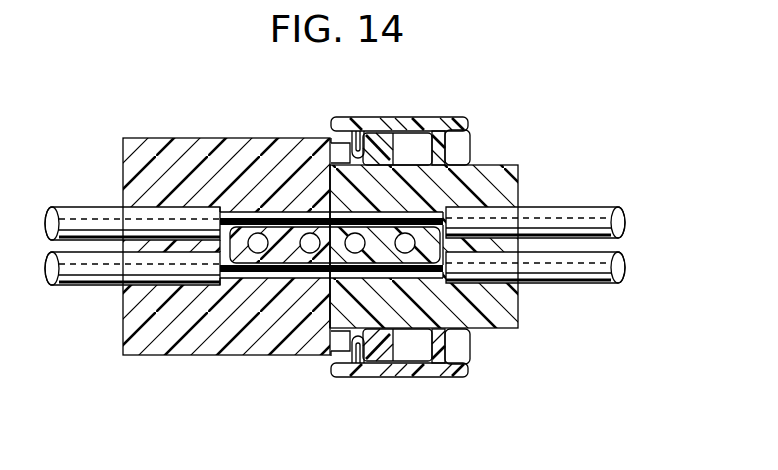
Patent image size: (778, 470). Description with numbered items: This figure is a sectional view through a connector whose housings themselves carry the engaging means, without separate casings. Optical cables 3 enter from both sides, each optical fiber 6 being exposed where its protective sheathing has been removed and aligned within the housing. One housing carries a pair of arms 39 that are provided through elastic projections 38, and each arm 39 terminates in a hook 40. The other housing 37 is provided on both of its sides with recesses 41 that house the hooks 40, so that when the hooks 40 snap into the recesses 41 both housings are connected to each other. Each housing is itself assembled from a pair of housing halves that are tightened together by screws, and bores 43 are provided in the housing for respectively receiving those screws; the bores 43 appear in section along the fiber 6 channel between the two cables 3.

The optical cable 3 is at (567, 205).
The optical fiber 6 is at (438, 212).
The housing 37 is at (156, 338).
The projection 38 is at (448, 147).
The arm 39 is at (418, 122).
The hook 40 is at (357, 150).
The recess 41 is at (348, 152).
The bore 43 is at (355, 233).